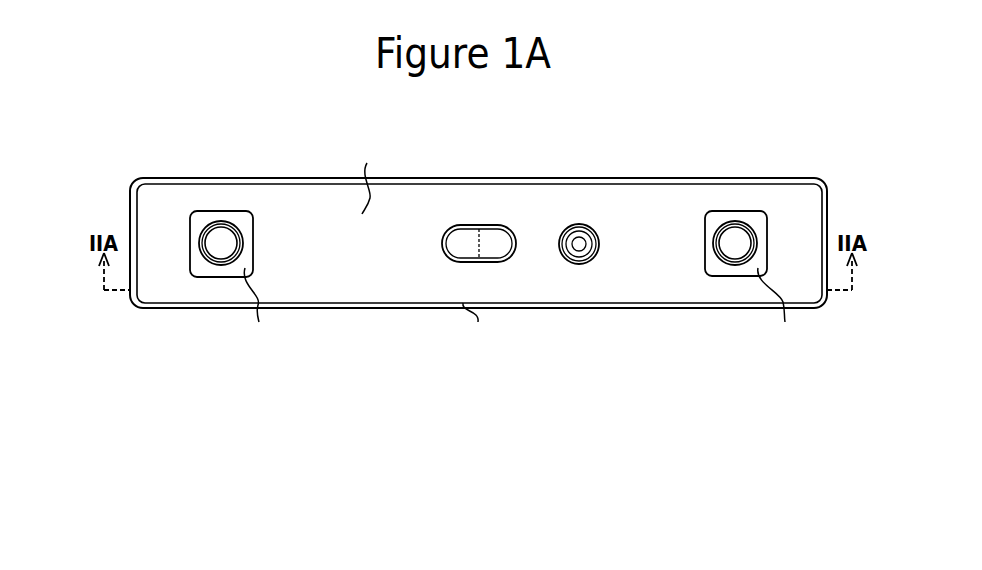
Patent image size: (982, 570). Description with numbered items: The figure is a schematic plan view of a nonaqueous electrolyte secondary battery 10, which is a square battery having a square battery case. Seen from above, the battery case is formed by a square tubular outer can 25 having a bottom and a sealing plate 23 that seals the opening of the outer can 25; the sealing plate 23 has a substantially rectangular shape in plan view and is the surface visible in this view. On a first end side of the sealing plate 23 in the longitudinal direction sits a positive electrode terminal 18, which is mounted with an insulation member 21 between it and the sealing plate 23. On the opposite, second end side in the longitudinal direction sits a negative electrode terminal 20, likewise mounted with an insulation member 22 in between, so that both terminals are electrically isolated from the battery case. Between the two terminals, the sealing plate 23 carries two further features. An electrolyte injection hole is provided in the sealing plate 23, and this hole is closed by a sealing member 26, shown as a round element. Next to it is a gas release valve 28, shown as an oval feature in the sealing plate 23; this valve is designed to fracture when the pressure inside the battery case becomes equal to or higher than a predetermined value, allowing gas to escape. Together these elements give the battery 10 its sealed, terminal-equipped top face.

The nonaqueous electrolyte secondary battery 10 is at (88, 162).
The positive electrode terminal 18 is at (735, 240).
The negative electrode terminal 20 is at (217, 238).
The insulation member 21 is at (780, 309).
The insulation member 22 is at (259, 309).
The sealing plate 23 is at (368, 174).
The outer can 25 is at (478, 329).
The sealing member 26 is at (579, 264).
The gas release valve 28 is at (492, 237).